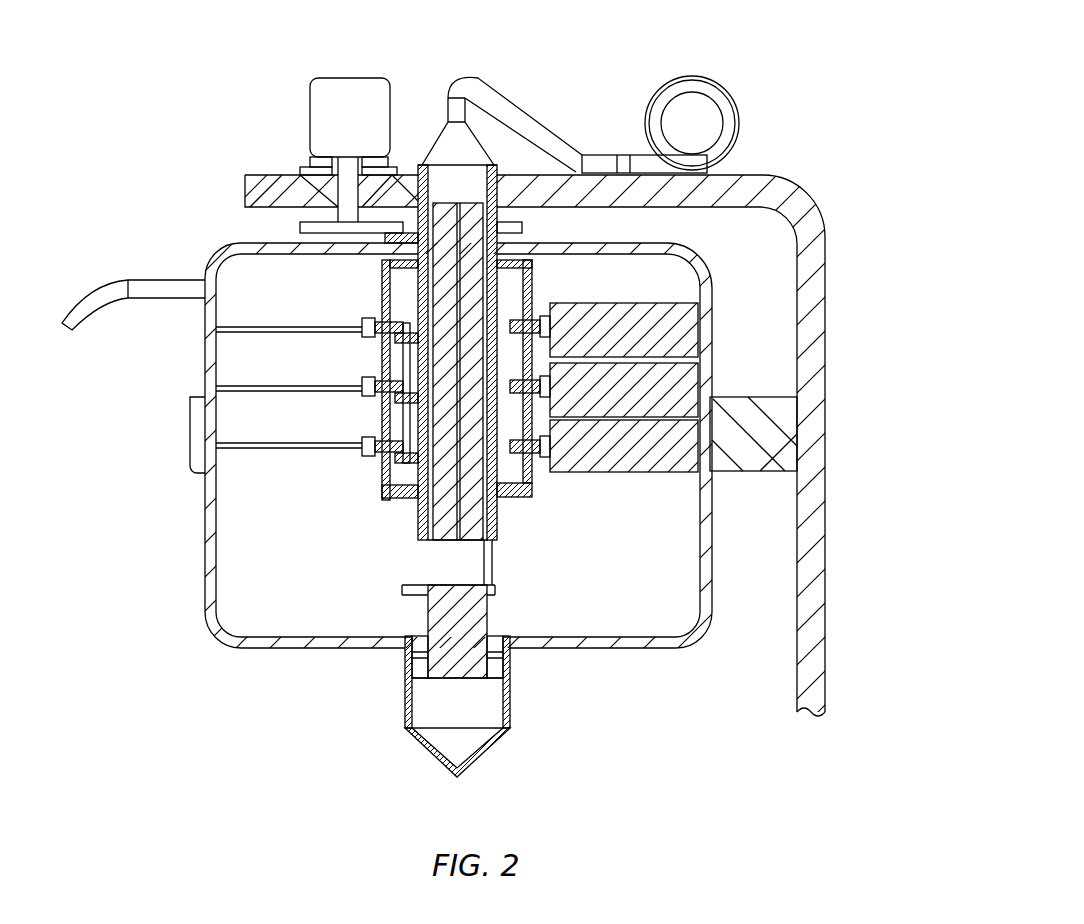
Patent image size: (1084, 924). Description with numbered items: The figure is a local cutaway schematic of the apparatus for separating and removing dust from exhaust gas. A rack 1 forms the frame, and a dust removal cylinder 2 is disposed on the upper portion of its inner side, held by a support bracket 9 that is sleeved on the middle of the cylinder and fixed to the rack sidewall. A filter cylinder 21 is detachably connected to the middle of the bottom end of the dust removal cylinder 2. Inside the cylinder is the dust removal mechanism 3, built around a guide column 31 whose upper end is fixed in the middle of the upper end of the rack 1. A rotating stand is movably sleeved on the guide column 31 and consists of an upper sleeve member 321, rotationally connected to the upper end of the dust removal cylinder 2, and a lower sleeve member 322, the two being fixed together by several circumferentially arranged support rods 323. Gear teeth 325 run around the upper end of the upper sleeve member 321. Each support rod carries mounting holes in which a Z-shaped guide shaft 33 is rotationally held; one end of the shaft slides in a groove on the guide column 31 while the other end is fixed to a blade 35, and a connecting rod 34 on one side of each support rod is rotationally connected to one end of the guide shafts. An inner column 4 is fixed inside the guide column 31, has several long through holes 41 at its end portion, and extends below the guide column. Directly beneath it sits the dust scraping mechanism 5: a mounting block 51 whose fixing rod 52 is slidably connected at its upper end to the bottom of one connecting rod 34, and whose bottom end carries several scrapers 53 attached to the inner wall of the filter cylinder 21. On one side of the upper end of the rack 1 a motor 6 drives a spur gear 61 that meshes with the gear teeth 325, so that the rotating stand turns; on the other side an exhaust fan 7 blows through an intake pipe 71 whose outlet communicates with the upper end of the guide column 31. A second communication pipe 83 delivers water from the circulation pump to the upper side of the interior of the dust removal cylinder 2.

The rack 1 is at (590, 445).
The dust removal cylinder 2 is at (562, 445).
The filter cylinder 21 is at (515, 708).
The dust removal mechanism 3 is at (293, 352).
The guide column 31 is at (402, 272).
The upper sleeve member 321 is at (263, 191).
The lower sleeve member 322 is at (256, 564).
The support rods 323 is at (242, 390).
The gear teeth 325 is at (289, 155).
The Z-shaped guide shaft 33 is at (701, 287).
The connecting rod 34 is at (256, 452).
The blade 35 is at (747, 316).
The inner column 4 is at (534, 272).
The long through holes 41 is at (552, 272).
The dust scraping mechanism 5 is at (513, 615).
The mounting block 51 is at (409, 684).
The fixing rod 52 is at (622, 633).
The scrapers 53 is at (371, 682).
The motor 6 is at (309, 113).
The spur gear 61 is at (237, 199).
The exhaust fan 7 is at (737, 116).
The intake pipe 71 is at (577, 89).
The second communication pipe 83 is at (133, 277).
The support bracket 9 is at (822, 416).